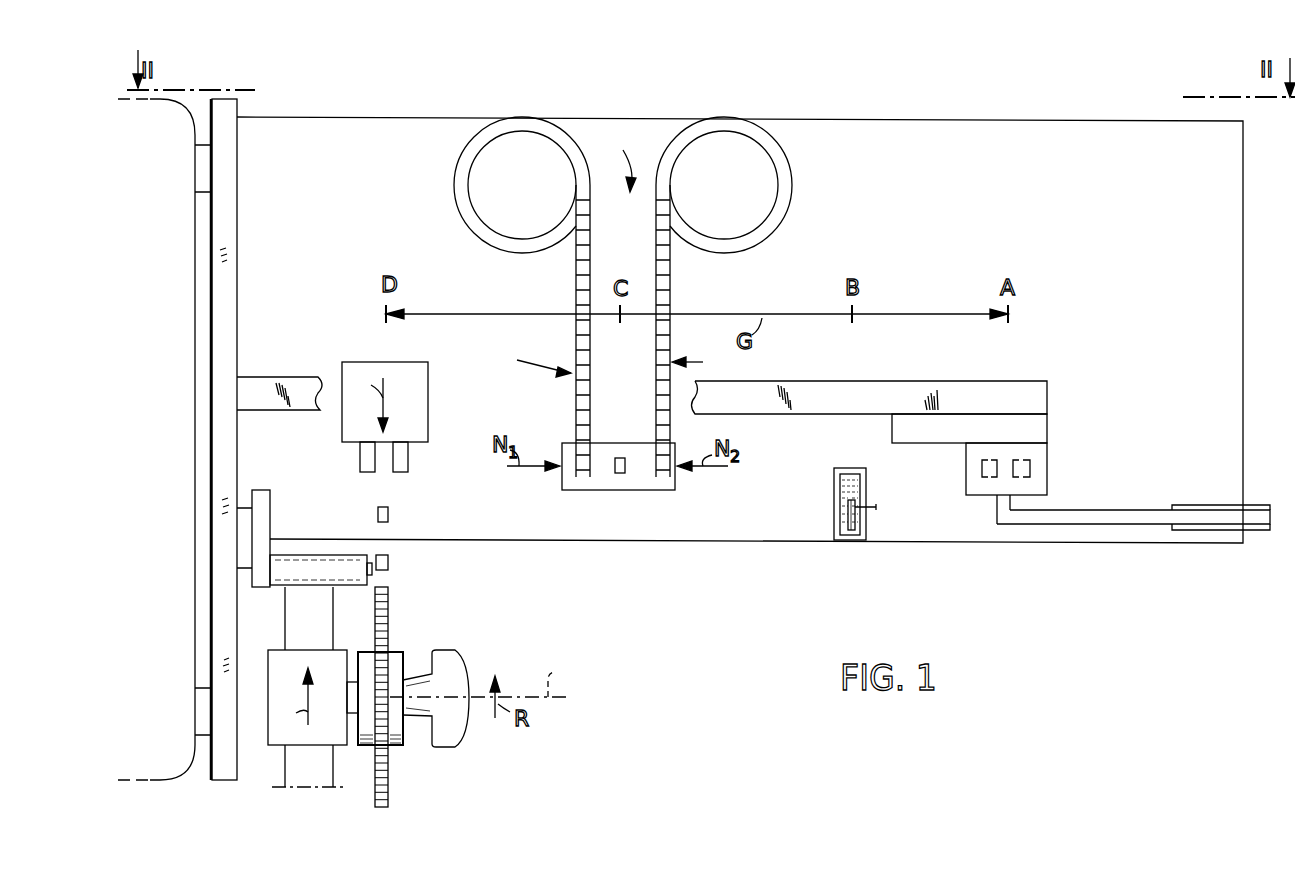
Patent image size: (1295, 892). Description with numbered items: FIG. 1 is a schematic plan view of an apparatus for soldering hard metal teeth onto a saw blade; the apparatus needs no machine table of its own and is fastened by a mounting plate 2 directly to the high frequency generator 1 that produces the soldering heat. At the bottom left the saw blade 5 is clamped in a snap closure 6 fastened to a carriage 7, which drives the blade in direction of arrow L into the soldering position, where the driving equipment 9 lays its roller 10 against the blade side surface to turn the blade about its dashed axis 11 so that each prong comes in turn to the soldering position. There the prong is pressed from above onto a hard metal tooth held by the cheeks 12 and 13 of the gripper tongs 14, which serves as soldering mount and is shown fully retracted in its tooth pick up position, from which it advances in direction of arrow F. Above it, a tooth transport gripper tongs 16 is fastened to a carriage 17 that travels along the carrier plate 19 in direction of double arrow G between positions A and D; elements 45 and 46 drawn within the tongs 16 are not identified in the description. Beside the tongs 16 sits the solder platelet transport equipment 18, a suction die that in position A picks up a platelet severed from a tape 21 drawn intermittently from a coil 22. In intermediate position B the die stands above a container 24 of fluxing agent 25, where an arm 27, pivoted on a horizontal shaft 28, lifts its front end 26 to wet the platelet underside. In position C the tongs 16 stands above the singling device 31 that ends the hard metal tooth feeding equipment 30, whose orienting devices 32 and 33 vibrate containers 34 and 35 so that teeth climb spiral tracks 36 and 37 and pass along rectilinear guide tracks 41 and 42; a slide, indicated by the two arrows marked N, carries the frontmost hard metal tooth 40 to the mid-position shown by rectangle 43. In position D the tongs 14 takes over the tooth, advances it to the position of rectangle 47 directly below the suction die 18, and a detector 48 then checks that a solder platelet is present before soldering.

The high frequency generator 1 is at (148, 270).
The mounting plate 2 is at (231, 245).
The saw blade 5 is at (388, 612).
The snap closure 6 is at (395, 727).
The carriage 7 is at (271, 737).
The driving equipment 9 is at (325, 583).
The roller 10 is at (367, 572).
The axis 11 is at (563, 675).
The cheek 12 is at (362, 460).
The cheek 13 is at (405, 458).
The gripper tongs 14 is at (343, 423).
The tooth transport gripper tongs 16 is at (1045, 468).
The carriage 17 is at (1042, 426).
The solder platelet transport equipment 18 is at (995, 498).
The carrier plate 19 is at (262, 388).
The tape 21 is at (1123, 512).
The coil 22 is at (1186, 505).
The container 24 is at (852, 470).
The fluxing agent 25 is at (840, 487).
The front end 26 is at (850, 527).
The arm 27 is at (848, 516).
The horizontal shaft 28 is at (876, 507).
The hard metal tooth feeding equipment 30 is at (618, 161).
The singling device 31 is at (598, 485).
The orienting device 32 is at (481, 163).
The orienting device 33 is at (783, 162).
The container 34 is at (531, 190).
The container 35 is at (733, 190).
The spiral track 36 is at (462, 205).
The spiral track 37 is at (780, 210).
The hard metal teeth 40 is at (580, 278).
The guide track 41 is at (531, 364).
The guide track 42 is at (701, 361).
The rectangle 43 is at (619, 476).
The contact 45 is at (1013, 450).
The contact 46 is at (990, 450).
The rectangle 47 is at (377, 513).
The detector 48 is at (388, 562).